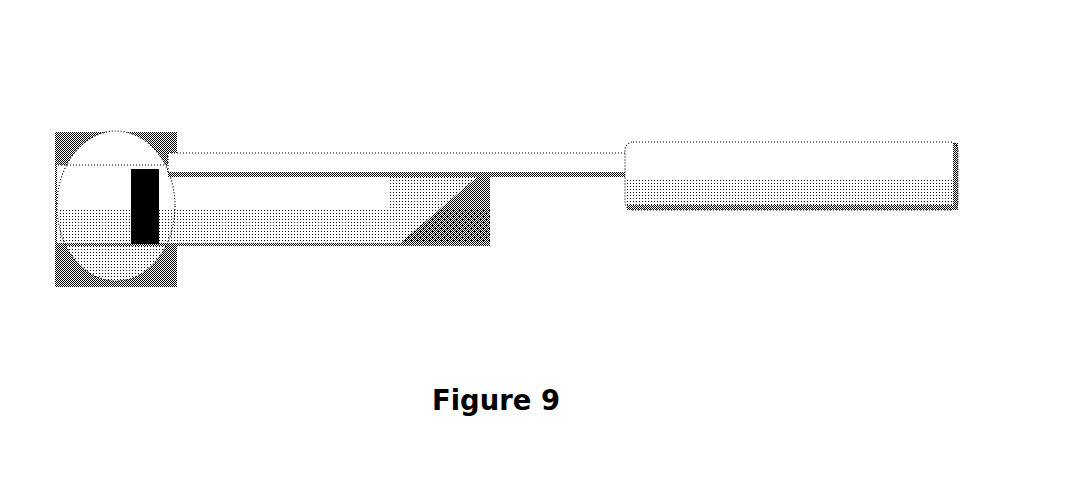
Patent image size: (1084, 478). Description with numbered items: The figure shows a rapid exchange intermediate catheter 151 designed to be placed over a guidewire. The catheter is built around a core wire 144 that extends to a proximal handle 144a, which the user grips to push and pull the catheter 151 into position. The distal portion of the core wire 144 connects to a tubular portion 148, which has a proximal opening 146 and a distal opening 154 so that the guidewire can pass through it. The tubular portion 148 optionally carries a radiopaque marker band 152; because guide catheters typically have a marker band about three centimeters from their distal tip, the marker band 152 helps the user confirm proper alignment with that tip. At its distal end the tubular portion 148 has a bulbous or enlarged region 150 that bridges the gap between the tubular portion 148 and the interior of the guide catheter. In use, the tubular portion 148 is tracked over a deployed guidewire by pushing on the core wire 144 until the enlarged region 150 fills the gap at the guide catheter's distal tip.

The core wire 144 is at (577, 177).
The proximal handle 144a is at (803, 205).
The proximal opening 146 is at (425, 223).
The tubular portion 148 is at (308, 232).
The bulbous or enlarged region 150 is at (163, 270).
The rapid exchange intermediate catheter 151 is at (280, 358).
The radiopaque marker band 152 is at (146, 169).
The distal opening 154 is at (56, 242).